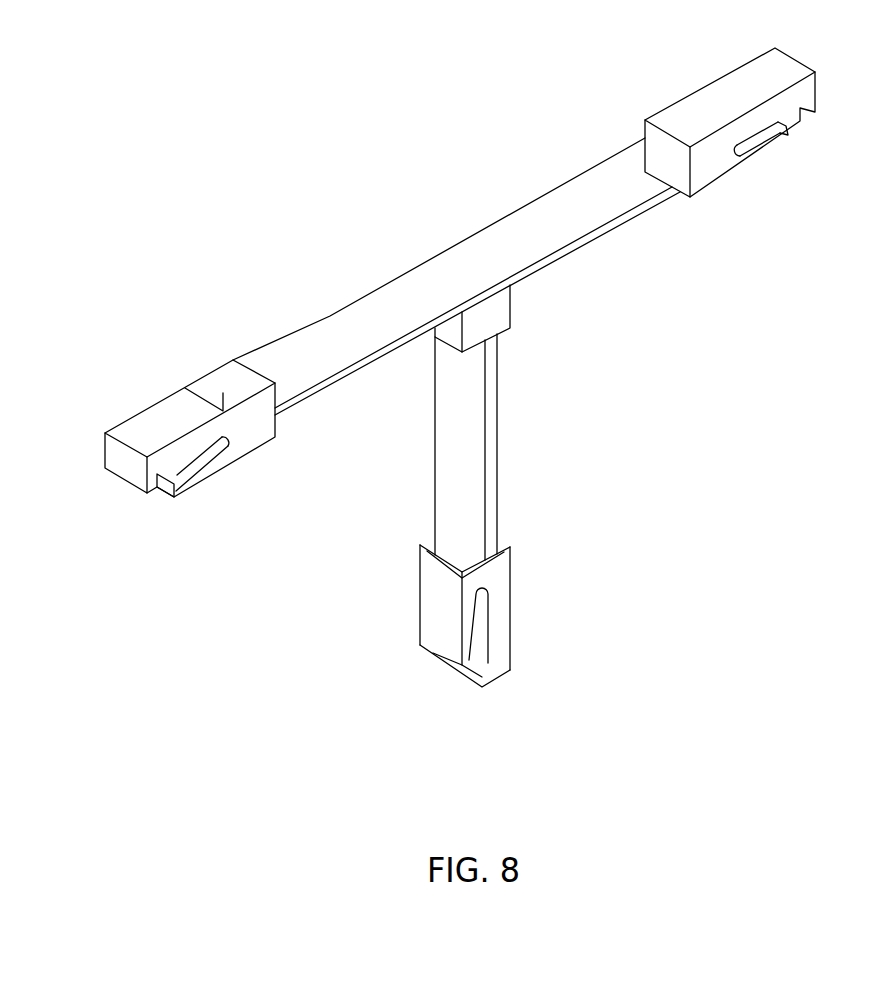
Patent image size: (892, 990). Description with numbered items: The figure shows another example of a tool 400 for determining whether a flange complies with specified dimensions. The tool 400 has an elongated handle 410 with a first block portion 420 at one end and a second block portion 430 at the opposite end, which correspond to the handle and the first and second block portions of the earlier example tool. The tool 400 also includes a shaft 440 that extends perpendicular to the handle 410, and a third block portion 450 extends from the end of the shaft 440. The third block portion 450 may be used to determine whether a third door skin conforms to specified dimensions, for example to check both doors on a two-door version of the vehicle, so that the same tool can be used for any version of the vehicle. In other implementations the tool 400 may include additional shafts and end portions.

The tool 400 is at (170, 66).
The handle 410 is at (431, 259).
The first block portion 420 is at (712, 82).
The second block portion 430 is at (175, 394).
The shaft 440 is at (435, 469).
The third block portion 450 is at (424, 604).